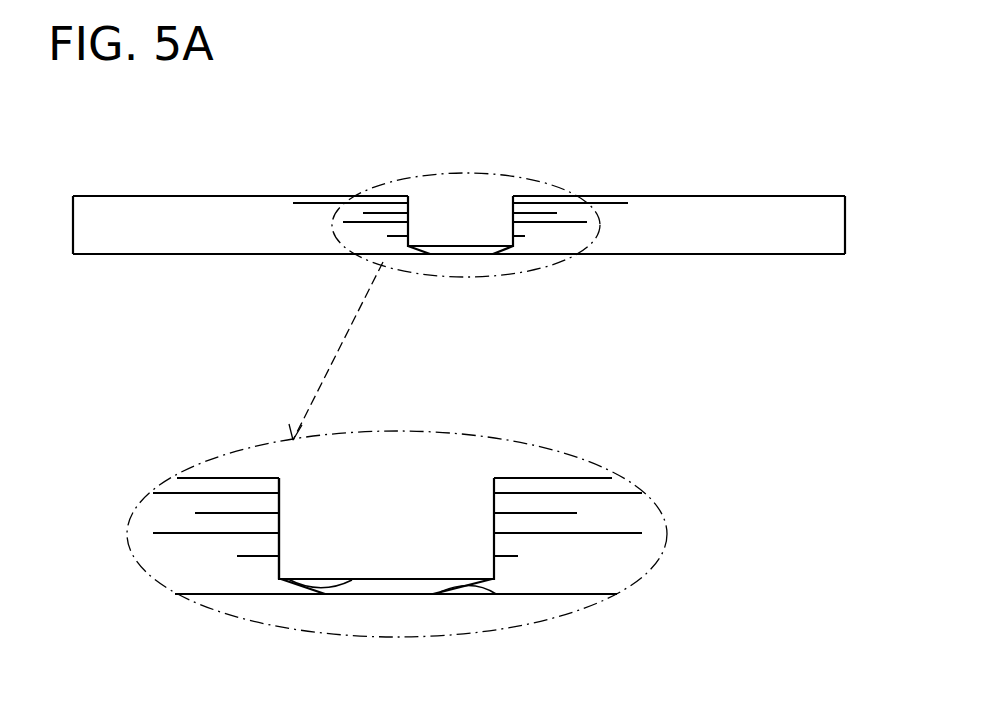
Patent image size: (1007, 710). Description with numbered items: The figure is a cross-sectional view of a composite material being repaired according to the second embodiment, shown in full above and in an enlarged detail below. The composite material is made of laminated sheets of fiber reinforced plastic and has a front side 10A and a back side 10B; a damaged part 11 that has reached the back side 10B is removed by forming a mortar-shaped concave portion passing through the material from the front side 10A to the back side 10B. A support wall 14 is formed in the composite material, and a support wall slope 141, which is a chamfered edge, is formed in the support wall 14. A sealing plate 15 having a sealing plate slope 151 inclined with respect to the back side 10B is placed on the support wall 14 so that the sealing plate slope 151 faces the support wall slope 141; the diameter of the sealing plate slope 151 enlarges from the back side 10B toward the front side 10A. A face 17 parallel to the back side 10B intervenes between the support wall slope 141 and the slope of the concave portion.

The front side 10A is at (147, 195).
The back side 10B is at (160, 255).
The damaged part 11 is at (312, 200).
The support wall 14 is at (417, 248).
The support wall slope 141 is at (356, 580).
The sealing plate 15 is at (472, 257).
The sealing plate slope 151 is at (497, 590).
The face 17 is at (287, 576).